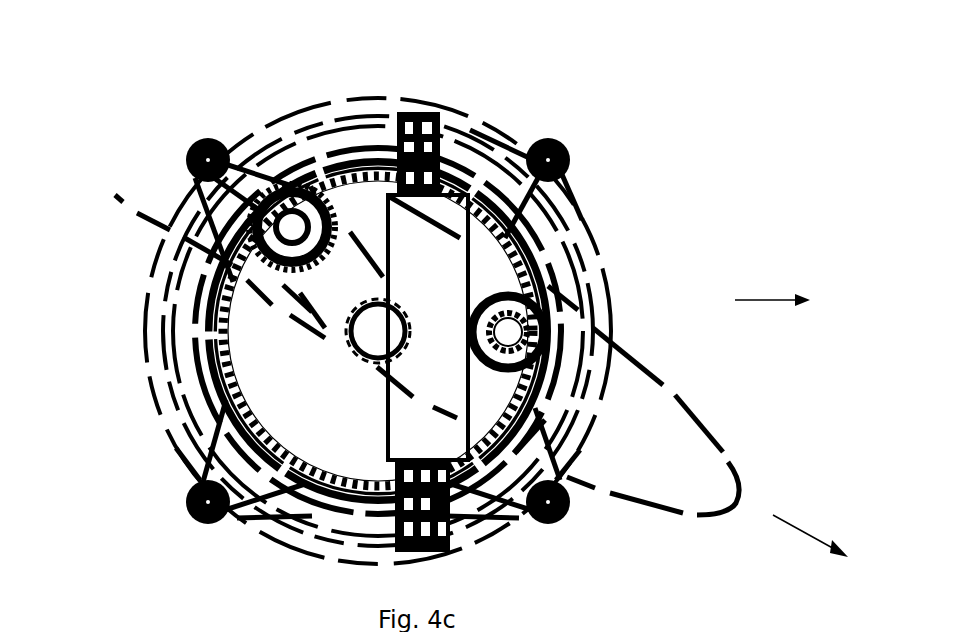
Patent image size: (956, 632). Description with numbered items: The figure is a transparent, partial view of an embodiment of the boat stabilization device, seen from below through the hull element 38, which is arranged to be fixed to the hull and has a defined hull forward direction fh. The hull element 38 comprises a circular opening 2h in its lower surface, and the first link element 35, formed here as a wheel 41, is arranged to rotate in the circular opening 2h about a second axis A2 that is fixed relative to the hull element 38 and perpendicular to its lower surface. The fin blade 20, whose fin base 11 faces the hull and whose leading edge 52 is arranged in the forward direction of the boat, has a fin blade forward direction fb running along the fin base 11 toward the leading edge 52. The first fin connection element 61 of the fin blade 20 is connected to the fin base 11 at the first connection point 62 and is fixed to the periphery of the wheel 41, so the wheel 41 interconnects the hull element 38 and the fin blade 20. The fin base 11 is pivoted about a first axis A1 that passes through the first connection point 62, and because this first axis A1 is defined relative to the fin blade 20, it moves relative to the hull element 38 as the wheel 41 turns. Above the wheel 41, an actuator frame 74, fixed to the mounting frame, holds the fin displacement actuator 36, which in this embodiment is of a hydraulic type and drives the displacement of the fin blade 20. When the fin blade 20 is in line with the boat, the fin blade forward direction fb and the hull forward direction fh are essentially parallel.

The first axis A1 is at (362, 138).
The first fin connection element 61 is at (362, 138).
The first connection point 62 is at (362, 138).
The second axis A2 is at (452, 198).
The actuator frame 74 is at (526, 168).
The hull element 38 is at (394, 331).
The circular opening 2h is at (672, 241).
The first link element 35 is at (305, 331).
The wheel 41 is at (299, 331).
The fin displacement actuator 36 is at (462, 300).
The fin base 11 is at (474, 379).
The fin blade 20 is at (474, 379).
The leading edge 52 is at (733, 507).
The hull forward direction fh is at (772, 291).
The fin blade forward direction fb is at (810, 527).